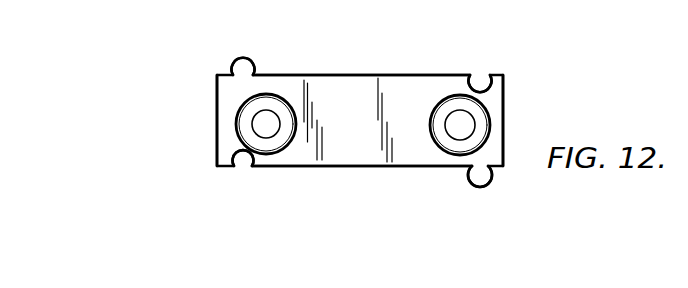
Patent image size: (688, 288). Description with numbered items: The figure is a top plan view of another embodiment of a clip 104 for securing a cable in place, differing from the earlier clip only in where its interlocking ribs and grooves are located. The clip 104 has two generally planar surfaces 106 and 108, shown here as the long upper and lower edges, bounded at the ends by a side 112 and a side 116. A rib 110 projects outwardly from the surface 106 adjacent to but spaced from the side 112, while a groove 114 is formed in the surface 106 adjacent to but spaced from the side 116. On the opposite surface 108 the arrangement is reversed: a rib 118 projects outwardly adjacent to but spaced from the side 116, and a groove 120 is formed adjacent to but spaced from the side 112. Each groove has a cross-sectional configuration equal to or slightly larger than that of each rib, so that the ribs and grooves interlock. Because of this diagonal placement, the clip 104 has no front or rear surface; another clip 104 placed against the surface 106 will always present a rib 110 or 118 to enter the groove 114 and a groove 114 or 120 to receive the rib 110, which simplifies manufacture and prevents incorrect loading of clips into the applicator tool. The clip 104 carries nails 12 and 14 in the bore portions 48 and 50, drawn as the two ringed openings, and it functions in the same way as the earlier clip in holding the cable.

The clip 104 is at (168, 144).
The bore portion 48 is at (246, 104).
The nail 12 is at (253, 124).
The bore portion 50 is at (490, 104).
The nail 14 is at (475, 118).
The planar surface 106 is at (346, 75).
The planar surface 108 is at (347, 167).
The rib 110 is at (245, 57).
The side 112 is at (217, 160).
The groove 114 is at (481, 84).
The side 116 is at (504, 131).
The rib 118 is at (480, 188).
The groove 120 is at (243, 157).